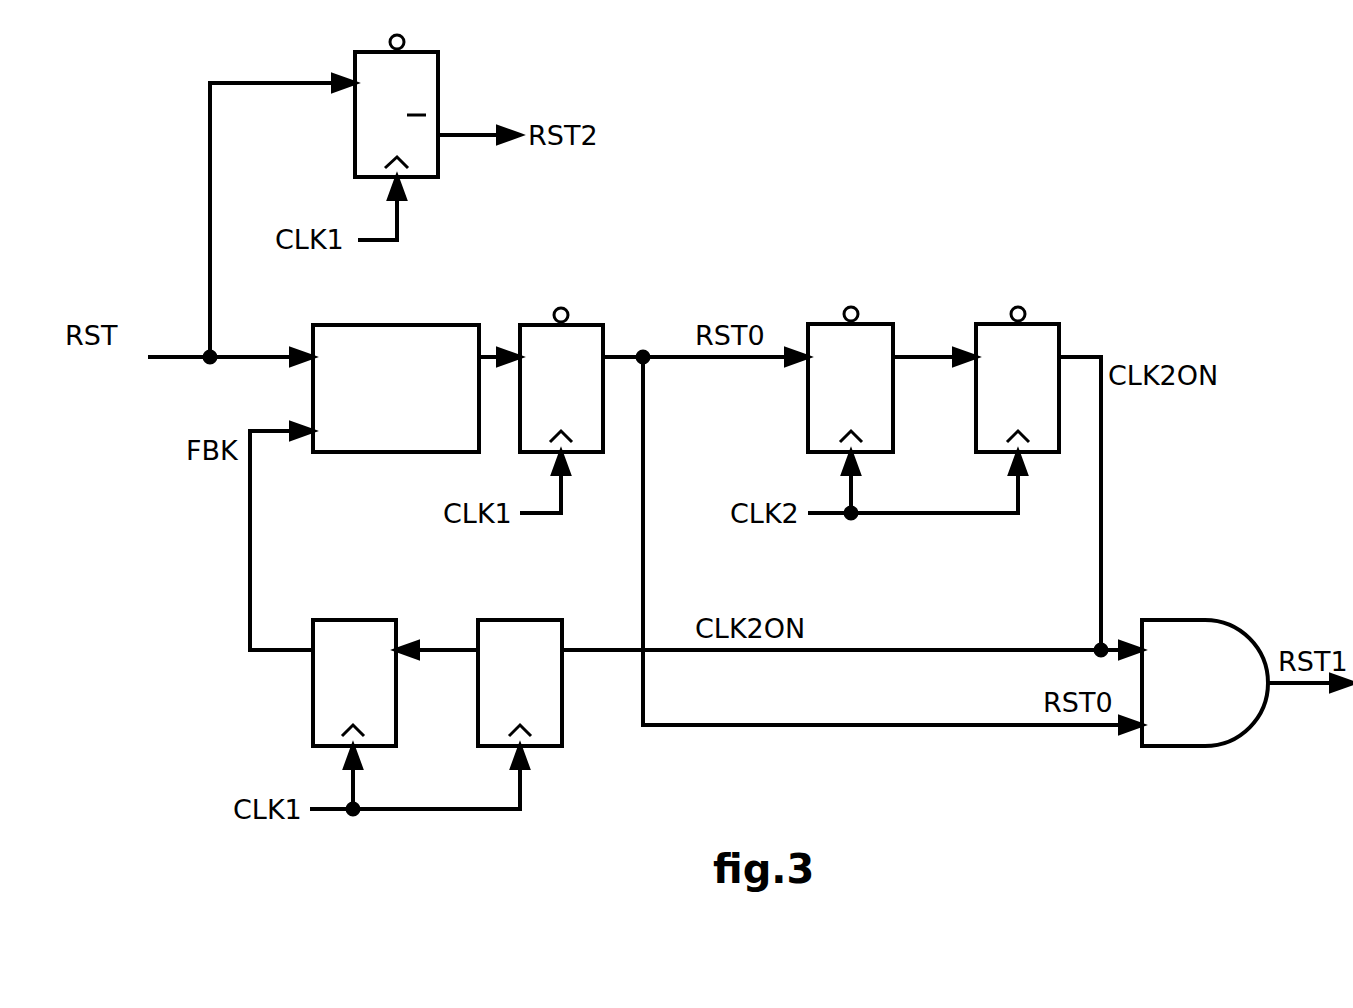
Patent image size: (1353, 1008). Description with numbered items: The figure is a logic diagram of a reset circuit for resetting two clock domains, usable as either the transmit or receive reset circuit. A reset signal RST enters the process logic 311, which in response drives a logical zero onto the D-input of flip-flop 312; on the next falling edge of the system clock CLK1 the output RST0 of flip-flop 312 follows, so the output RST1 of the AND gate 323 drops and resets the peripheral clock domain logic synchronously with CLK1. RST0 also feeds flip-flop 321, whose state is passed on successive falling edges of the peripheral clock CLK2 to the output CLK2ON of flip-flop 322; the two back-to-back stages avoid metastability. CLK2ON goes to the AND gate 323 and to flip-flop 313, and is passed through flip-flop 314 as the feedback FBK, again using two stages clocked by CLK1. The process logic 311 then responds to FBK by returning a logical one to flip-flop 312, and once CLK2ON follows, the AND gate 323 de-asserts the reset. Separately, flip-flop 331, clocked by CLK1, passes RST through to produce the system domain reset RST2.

The process logic 311 is at (408, 325).
The flip-flop 312 is at (580, 325).
The flip-flop 313 is at (498, 620).
The flip-flop 314 is at (332, 620).
The flip-flop 321 is at (870, 324).
The flip-flop 322 is at (1037, 324).
The AND gate 323 is at (1180, 620).
The flip-flop 331 is at (416, 52).